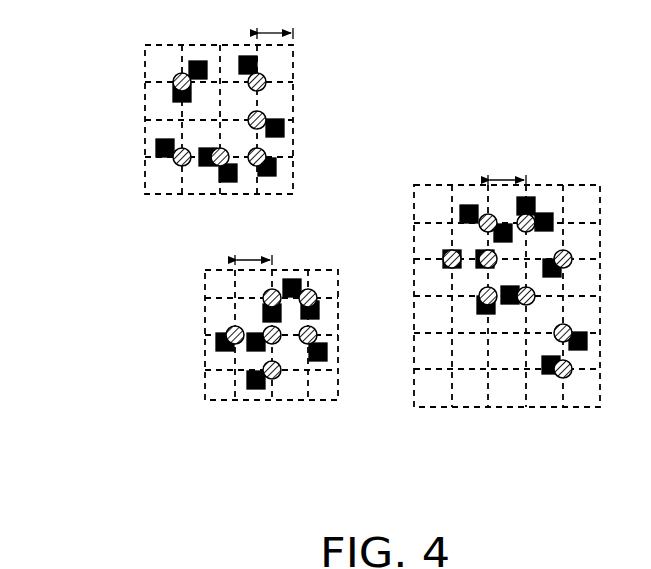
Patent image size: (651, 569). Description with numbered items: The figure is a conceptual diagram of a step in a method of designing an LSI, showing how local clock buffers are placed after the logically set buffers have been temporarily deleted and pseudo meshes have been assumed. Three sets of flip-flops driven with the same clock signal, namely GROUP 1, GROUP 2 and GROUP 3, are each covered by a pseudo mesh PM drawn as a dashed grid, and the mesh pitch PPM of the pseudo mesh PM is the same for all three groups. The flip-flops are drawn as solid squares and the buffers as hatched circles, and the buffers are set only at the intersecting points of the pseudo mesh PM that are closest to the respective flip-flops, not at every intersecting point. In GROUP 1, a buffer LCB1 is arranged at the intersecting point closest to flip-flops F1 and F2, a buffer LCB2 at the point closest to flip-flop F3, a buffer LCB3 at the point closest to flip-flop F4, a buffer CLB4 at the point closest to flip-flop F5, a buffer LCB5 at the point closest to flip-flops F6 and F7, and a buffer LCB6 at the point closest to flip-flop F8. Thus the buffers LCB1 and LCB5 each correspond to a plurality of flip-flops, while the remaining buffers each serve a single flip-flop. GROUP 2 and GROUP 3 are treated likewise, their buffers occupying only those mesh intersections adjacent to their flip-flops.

The pseudo mesh PM is at (240, 46).
The mesh pitch of the pseudo mesh PPM is at (380, 135).
The flip-flop F1 is at (198, 61).
The flip-flop F2 is at (173, 93).
The flip-flop F3 is at (257, 67).
The flip-flop F4 is at (284, 128).
The flip-flop F5 is at (272, 176).
The flip-flop F6 is at (222, 182).
The flip-flop F7 is at (201, 163).
The flip-flop F8 is at (156, 148).
The local clock buffer LCB1 is at (175, 77).
The local clock buffer LCB2 is at (266, 84).
The local clock buffer LCB3 is at (262, 129).
The local clock buffer CLB4 is at (256, 166).
The local clock buffer LCB5 is at (215, 165).
The local clock buffer LCB6 is at (175, 161).
The group GROUP 1 is at (300, 135).
The group GROUP 2 is at (265, 406).
The group GROUP 3 is at (520, 413).